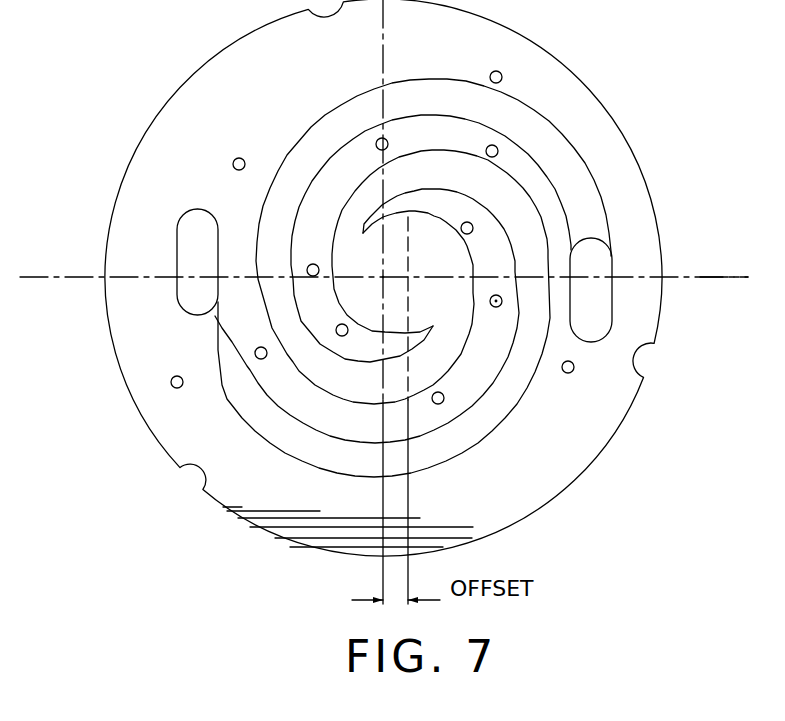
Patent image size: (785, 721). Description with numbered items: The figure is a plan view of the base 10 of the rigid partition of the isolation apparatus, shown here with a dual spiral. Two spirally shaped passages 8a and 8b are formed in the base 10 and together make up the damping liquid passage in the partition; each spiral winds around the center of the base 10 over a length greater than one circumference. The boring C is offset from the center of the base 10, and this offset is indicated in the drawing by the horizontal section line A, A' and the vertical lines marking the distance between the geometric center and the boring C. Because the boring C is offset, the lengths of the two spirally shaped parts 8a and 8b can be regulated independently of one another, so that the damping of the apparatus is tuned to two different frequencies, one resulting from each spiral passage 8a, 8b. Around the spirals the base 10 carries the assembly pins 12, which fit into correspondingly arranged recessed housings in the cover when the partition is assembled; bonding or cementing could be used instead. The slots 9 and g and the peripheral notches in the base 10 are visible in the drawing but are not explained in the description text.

The spiral passage 8a is at (279, 436).
The spiral passage 8b is at (350, 388).
The slot 9 is at (601, 302).
The base 10 is at (662, 156).
The assembly pins 12 is at (497, 70).
The slot g is at (198, 288).
The boring C is at (372, 266).
The section line A is at (384, 260).
The section line A' is at (724, 260).